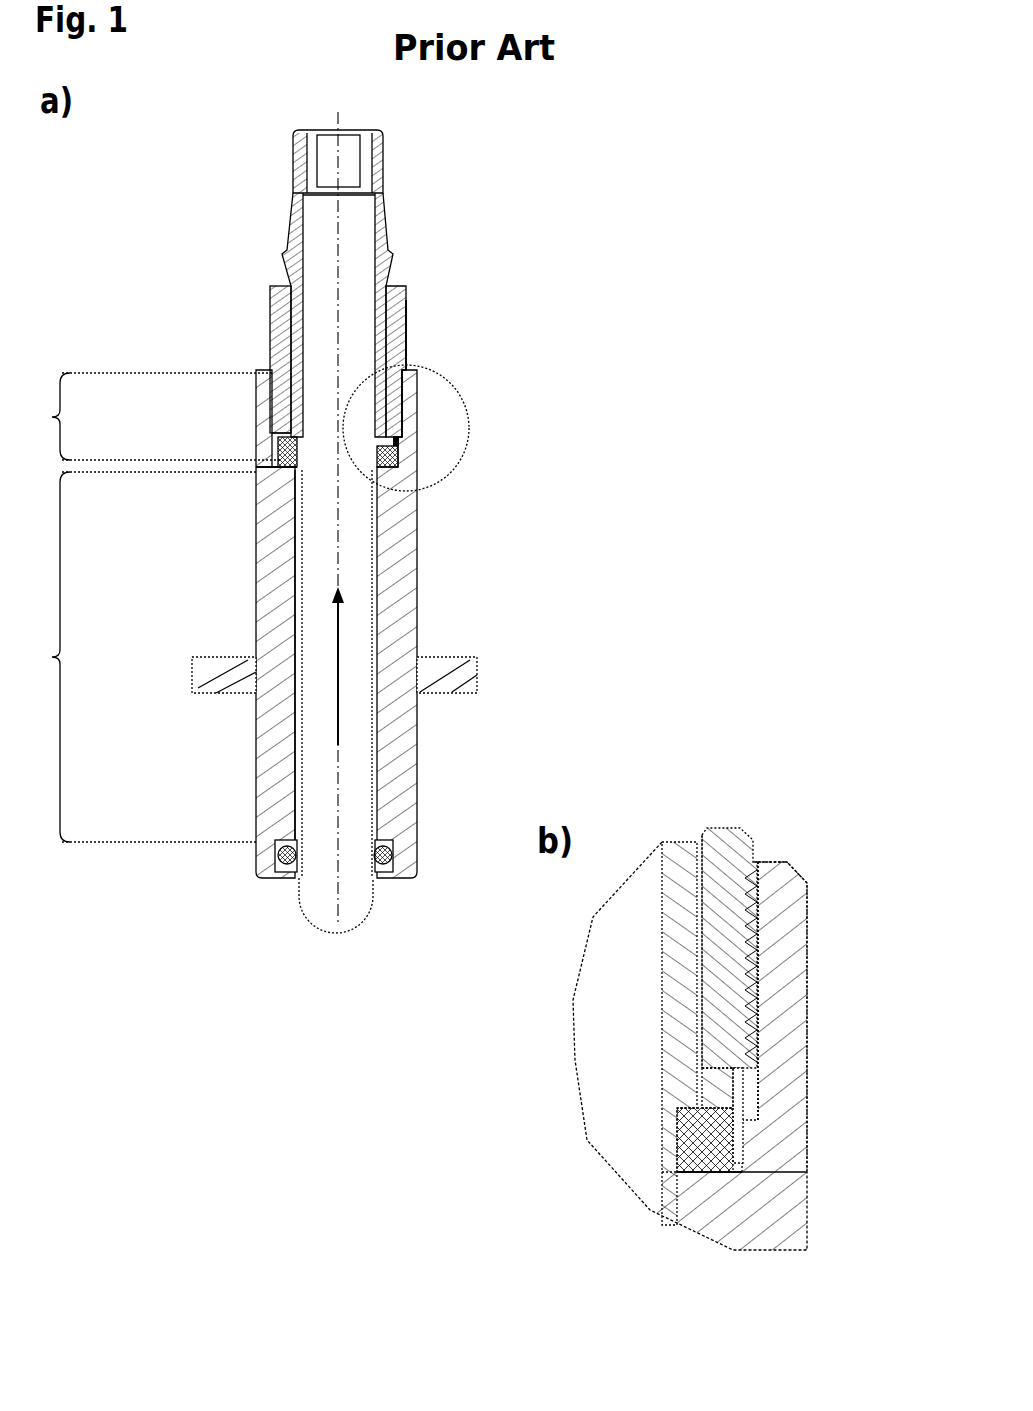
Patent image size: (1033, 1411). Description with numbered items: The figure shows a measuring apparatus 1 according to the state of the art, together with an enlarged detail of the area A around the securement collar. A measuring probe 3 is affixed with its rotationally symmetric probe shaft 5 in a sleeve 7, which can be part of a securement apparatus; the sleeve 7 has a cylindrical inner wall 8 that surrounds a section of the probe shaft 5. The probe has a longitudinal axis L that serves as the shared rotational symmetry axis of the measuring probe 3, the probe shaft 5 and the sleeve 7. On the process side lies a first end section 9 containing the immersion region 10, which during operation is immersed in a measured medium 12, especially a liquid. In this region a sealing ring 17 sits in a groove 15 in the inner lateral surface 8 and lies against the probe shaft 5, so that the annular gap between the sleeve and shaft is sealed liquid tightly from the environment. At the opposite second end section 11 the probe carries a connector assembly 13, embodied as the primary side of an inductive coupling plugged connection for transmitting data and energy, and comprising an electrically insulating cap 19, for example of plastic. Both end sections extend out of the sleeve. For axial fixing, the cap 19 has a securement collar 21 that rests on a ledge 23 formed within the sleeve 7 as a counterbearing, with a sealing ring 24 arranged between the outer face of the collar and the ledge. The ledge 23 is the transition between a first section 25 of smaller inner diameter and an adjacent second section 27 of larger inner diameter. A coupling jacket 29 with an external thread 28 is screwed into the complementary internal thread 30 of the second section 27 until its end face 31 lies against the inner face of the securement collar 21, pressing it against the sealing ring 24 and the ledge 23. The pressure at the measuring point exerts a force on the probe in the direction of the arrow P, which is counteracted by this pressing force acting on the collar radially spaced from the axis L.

The measuring apparatus 1 is at (633, 275).
The measuring probe 3 is at (302, 797).
The probe shaft 5 is at (353, 607).
The sleeve 7 is at (400, 571).
The cylindrical inner wall 8 is at (377, 637).
The first end section 9 is at (262, 942).
The immersion region 10 is at (296, 898).
The second end section 11 is at (406, 178).
The measured medium 12 is at (355, 1001).
The connector assembly 13 is at (330, 160).
The groove 15 is at (390, 848).
The sealing ring 17 is at (278, 857).
The electrically insulating cap 19 is at (290, 207).
The securement collar 21 is at (399, 442).
The ledge 23 is at (282, 471).
The sealing ring 24 is at (398, 462).
The first section 25 is at (129, 657).
The second section 27 is at (142, 416).
The external thread 28 is at (400, 350).
The coupling jacket 29 is at (398, 306).
The internal thread 30 is at (402, 397).
The end face 31 is at (285, 435).
The longitudinal axis L is at (336, 122).
The arrow P is at (333, 637).
The area A is at (472, 397).